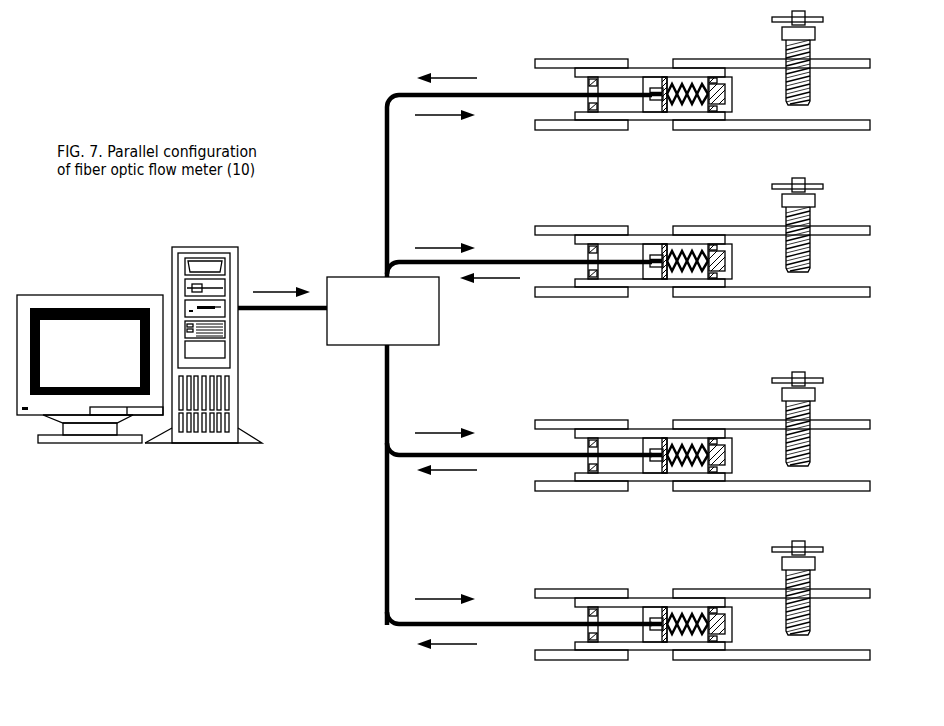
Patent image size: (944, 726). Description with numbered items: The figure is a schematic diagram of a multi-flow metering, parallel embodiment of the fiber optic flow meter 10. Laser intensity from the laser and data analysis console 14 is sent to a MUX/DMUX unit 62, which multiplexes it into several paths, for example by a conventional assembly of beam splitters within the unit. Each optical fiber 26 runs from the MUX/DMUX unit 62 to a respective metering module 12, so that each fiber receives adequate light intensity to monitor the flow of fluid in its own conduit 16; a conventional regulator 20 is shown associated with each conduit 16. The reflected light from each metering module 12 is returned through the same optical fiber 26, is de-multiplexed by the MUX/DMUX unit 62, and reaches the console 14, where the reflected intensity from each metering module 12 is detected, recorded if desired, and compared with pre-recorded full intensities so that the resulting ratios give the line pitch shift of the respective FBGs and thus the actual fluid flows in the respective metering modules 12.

The fiber optic flow meter 10 is at (164, 566).
The metering module 12 is at (653, 337).
The laser and data analysis console 14 is at (139, 377).
The fluid conduit 16 is at (702, 342).
The regulator 20 is at (818, 323).
The optical fiber 26 is at (387, 188).
The MUX/DMUX unit 62 is at (383, 311).